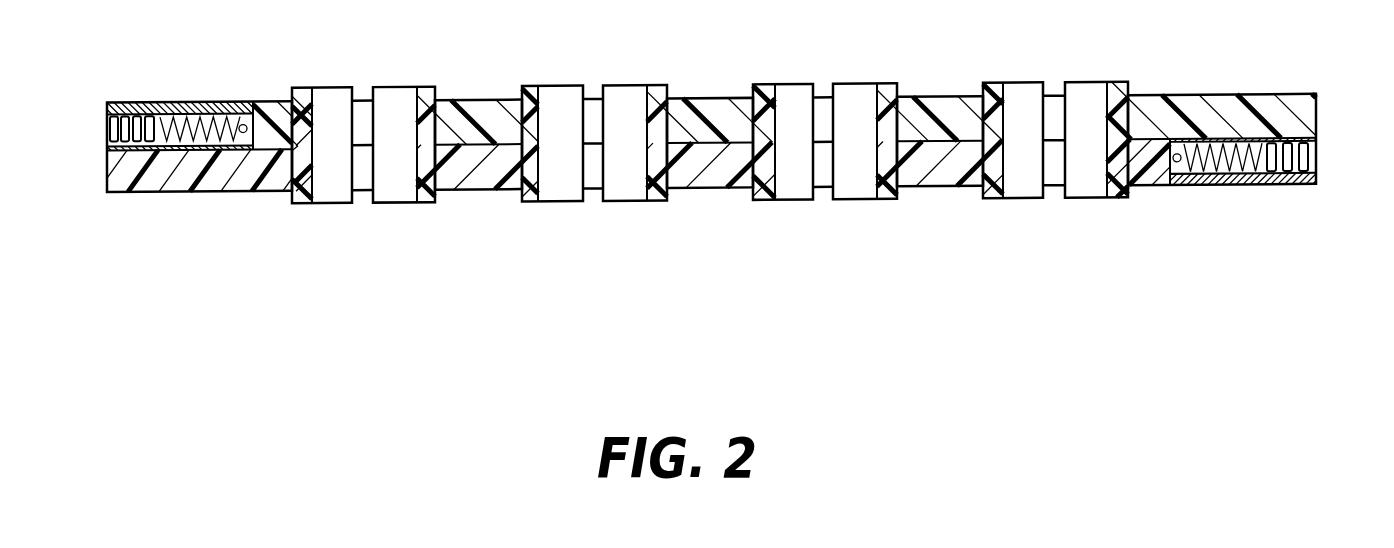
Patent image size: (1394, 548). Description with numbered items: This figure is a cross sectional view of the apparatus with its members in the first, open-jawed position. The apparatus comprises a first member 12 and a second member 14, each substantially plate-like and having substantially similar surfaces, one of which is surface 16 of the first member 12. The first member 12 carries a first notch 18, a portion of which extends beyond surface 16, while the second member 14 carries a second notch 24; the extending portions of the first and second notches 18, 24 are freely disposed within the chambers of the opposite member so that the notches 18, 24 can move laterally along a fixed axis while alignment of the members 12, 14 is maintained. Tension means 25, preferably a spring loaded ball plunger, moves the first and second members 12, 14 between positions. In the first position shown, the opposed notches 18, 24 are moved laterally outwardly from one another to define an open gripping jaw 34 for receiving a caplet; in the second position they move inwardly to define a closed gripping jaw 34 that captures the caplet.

The first member 12 is at (1318, 130).
The second member 14 is at (171, 191).
The surface 16 is at (477, 101).
The first notch 18 is at (322, 88).
The second notch 24 is at (384, 203).
The tension means 25 is at (107, 124).
The gripping jaw 34 is at (863, 83).